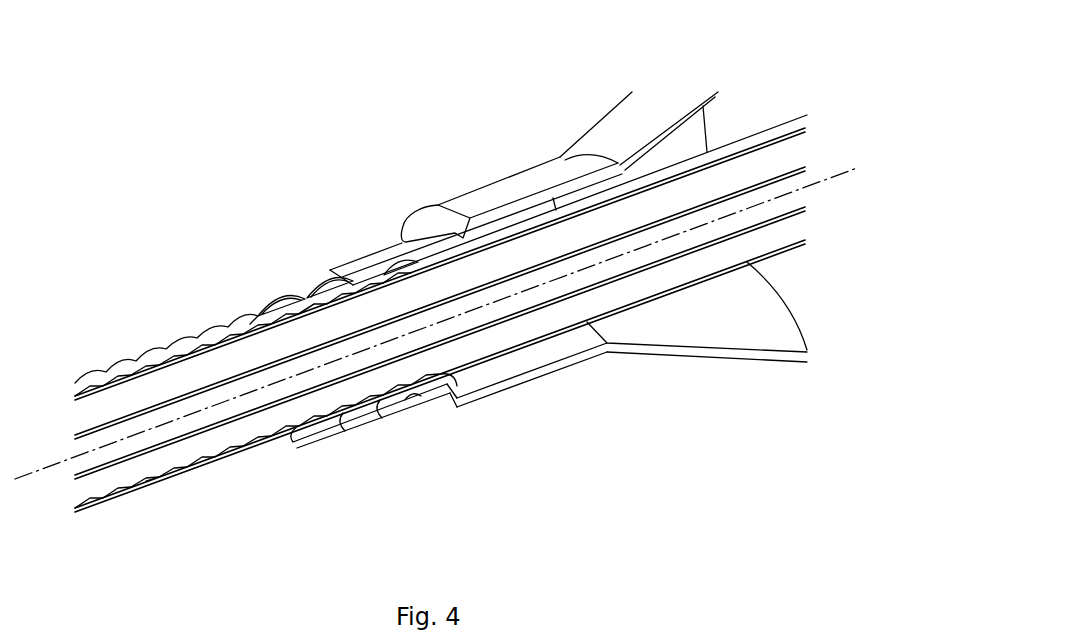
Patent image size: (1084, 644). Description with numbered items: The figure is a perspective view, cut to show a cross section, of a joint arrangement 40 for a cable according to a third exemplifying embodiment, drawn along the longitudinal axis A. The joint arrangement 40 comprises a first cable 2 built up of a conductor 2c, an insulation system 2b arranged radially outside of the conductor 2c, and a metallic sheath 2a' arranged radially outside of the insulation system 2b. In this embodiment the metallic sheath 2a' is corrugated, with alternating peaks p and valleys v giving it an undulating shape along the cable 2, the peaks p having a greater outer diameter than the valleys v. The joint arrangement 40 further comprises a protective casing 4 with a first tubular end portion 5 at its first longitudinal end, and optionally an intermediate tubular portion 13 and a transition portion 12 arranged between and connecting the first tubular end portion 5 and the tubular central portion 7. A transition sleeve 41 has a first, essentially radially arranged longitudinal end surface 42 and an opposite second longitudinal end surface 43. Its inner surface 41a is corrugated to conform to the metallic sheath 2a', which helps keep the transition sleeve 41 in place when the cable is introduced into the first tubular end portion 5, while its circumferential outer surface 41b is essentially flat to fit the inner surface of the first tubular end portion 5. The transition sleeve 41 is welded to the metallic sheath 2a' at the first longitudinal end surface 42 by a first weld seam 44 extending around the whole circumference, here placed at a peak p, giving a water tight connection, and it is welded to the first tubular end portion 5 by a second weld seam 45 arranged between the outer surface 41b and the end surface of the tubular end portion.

The first cable 2 is at (497, 331).
The metallic sheath 2a' is at (243, 334).
The insulation system 2b is at (117, 410).
The conductor 2c is at (147, 432).
The protective casing 4 is at (647, 350).
The first tubular end portion 5 is at (377, 258).
The tubular central portion 7 is at (790, 293).
The transition portion 12 is at (600, 145).
The intermediate tubular portion 13 is at (500, 200).
The joint arrangement 40 is at (478, 104).
The transition sleeve 41 is at (313, 254).
The inner surface 41a is at (345, 446).
The circumferential outer surface 41b is at (380, 440).
The first longitudinal end surface 42 is at (296, 442).
The second longitudinal end surface 43 is at (414, 272).
The first weld seam 44 is at (280, 302).
The second weld seam 45 is at (337, 280).
The longitudinal axis A is at (47, 470).
The peak p is at (307, 310).
The valley v is at (200, 475).